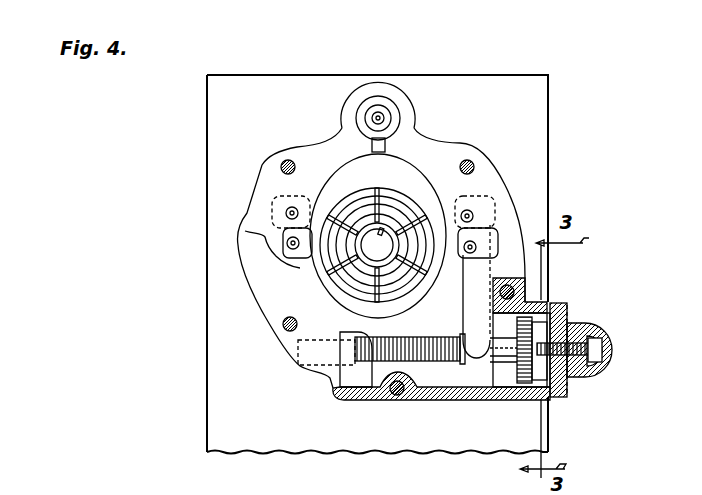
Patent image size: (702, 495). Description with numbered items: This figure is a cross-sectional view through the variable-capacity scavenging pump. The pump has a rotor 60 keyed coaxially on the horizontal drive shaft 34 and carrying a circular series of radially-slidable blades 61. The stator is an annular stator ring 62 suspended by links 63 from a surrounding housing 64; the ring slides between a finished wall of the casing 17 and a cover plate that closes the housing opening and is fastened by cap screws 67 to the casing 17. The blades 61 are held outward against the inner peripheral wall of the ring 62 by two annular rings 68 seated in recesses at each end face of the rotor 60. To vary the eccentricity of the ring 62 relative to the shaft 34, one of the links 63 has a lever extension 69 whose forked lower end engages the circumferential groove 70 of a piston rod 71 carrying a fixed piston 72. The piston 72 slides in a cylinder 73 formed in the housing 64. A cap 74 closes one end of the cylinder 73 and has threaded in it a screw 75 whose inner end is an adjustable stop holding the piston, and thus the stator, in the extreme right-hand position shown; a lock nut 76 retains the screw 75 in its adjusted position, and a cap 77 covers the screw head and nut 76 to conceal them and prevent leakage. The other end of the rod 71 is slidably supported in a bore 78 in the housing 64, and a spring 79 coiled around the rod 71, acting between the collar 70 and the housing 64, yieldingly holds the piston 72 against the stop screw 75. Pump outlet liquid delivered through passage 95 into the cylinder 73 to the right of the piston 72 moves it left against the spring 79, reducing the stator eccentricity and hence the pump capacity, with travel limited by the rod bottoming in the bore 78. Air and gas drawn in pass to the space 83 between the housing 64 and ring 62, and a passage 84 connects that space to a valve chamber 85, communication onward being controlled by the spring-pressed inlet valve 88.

The casing 17 is at (548, 148).
The horizontal drive shaft 34 is at (383, 232).
The rotor 60 is at (335, 282).
The radially-slidable blades 61 is at (360, 186).
The stator ring 62 is at (320, 266).
The suspension links 63 is at (500, 194).
The housing 64 is at (484, 175).
The cap screws 67 is at (281, 327).
The annular rings 68 is at (466, 159).
The lever extension 69 is at (472, 311).
The circumferential groove 70 is at (455, 400).
The piston rod 71 is at (325, 377).
The piston 72 is at (530, 385).
The cylinder 73 is at (505, 375).
The cap 74 is at (567, 393).
The screw 75 is at (611, 348).
The lock nut 76 is at (603, 368).
The cap 77 is at (595, 333).
The bore 78 is at (290, 375).
The spring 79 is at (366, 397).
The space 83 is at (315, 170).
The passage 84 is at (347, 115).
The valve chamber 85 is at (383, 104).
The spring-pressed inlet valve 88 is at (408, 103).
The passage 95 is at (573, 320).